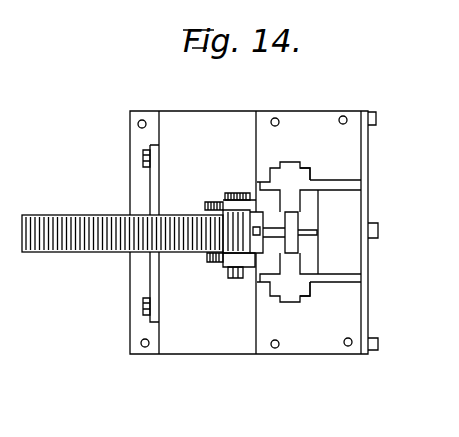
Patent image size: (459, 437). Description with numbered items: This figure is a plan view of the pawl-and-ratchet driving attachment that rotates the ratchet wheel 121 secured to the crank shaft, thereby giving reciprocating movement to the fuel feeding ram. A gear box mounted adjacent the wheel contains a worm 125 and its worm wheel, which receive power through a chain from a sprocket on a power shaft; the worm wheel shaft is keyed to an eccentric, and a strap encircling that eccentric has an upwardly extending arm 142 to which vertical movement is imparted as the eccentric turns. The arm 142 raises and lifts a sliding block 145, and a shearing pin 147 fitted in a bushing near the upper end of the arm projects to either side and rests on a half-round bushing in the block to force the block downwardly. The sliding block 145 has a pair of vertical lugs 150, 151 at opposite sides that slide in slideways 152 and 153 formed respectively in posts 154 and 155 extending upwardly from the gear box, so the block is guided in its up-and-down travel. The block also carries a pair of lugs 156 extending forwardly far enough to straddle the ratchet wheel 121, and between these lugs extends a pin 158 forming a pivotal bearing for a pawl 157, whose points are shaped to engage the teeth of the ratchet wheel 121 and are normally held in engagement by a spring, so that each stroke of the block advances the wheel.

The ratchet wheel 121 is at (67, 230).
The worm 125 is at (229, 112).
The arm 142 is at (293, 245).
The sliding block 145 is at (305, 206).
The shearing pin 147 is at (308, 231).
The vertical lug 150 is at (291, 167).
The vertical lug 151 is at (293, 297).
The slideway 152 is at (312, 168).
The slideway 153 is at (307, 290).
The post 154 is at (348, 180).
The post 155 is at (352, 280).
The lugs 156 is at (220, 207).
The pawl 157 is at (235, 278).
The pin 158 is at (236, 193).